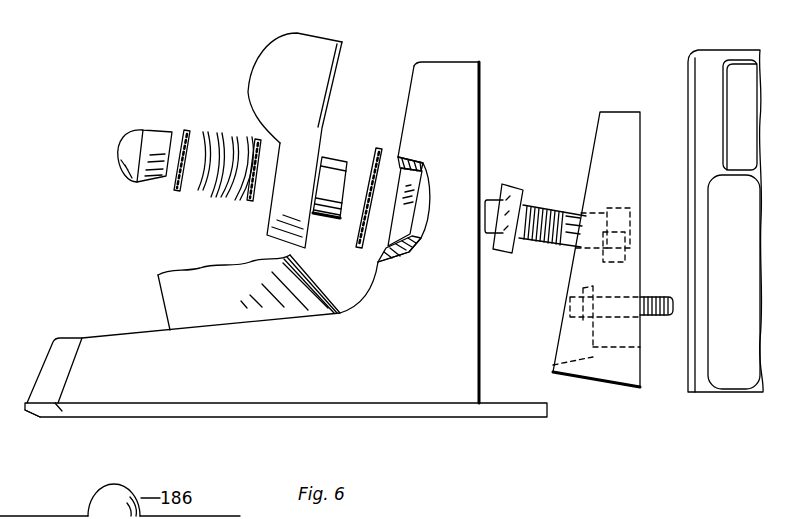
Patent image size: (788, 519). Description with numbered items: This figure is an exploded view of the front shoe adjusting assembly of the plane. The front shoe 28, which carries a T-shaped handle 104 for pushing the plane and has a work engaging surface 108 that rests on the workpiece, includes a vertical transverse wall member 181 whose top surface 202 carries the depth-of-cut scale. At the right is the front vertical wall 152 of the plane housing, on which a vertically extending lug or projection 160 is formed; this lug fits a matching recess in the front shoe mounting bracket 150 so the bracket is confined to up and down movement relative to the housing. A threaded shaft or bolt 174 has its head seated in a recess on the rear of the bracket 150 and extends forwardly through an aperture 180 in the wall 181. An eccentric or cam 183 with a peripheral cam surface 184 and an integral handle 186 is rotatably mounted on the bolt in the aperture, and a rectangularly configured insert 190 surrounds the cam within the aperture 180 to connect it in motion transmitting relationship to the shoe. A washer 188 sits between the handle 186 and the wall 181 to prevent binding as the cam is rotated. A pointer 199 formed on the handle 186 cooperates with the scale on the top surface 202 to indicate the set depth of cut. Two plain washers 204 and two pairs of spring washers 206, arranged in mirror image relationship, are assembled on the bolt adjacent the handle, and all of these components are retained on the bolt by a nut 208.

The front shoe 28 is at (279, 421).
The T-shaped handle 104 is at (168, 296).
The work engaging surface 108 is at (148, 420).
The top surface 202 is at (460, 62).
The vertical transverse wall member 181 is at (413, 72).
The aperture 180 is at (420, 237).
The handle 186 is at (263, 44).
The pointer 199 is at (345, 57).
The eccentric or cam 183 is at (352, 165).
The peripheral cam surface 184 is at (316, 216).
The washer 188 is at (393, 127).
The nut 208 is at (141, 133).
The plain washers 204 is at (187, 130).
The spring washers 206 is at (235, 199).
The lug or projection 160 is at (626, 143).
The front shoe mounting bracket 150 is at (641, 384).
The threaded shaft or bolt 174 is at (555, 212).
The insert 190 is at (502, 256).
The front vertical wall 152 is at (688, 82).